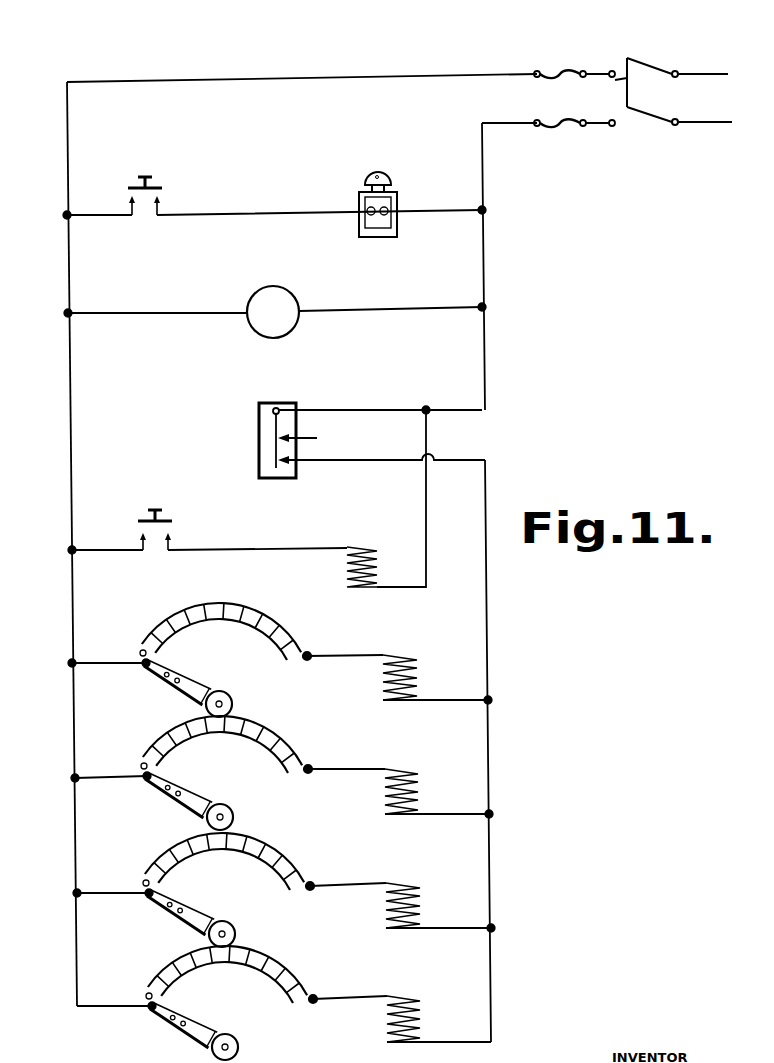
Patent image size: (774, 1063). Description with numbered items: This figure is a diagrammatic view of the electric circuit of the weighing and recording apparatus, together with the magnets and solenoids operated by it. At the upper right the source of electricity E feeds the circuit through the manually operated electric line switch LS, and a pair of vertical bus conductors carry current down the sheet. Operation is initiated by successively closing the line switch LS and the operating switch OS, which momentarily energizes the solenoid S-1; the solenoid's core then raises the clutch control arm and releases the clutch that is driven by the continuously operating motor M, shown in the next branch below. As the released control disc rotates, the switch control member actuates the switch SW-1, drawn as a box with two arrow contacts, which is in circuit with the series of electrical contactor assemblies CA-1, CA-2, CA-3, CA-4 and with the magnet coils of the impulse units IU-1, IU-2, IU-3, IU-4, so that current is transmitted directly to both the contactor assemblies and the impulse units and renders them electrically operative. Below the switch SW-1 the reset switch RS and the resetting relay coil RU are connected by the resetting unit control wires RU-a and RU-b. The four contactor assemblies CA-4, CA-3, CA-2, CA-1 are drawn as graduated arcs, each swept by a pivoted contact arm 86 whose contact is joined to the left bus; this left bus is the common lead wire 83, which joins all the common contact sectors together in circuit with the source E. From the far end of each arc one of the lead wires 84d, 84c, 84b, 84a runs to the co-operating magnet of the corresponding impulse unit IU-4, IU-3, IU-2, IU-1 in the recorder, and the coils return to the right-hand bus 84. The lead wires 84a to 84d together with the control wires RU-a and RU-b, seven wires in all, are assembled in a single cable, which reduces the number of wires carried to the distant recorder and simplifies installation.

The electric line switch LS is at (638, 58).
The source of electricity E is at (705, 78).
The operating switch OS is at (151, 186).
The solenoid S-1 is at (384, 199).
The motor M is at (292, 294).
The switch SW-1 is at (259, 433).
The reset push-button switch RS is at (160, 519).
The resetting unit control wire RU-a is at (253, 548).
The relay coil RU is at (363, 546).
The resetting unit control wire RU-b is at (428, 557).
The electrical contactor assembly CA-4 is at (225, 606).
The electrical contactor assembly CA-3 is at (245, 724).
The electrical contactor assembly CA-2 is at (266, 852).
The electrical contactor assembly CA-1 is at (266, 958).
The pivoted contact arm 86 is at (201, 686).
The common lead wire 83 is at (97, 663).
The return bus conductor 84 is at (490, 714).
The lead wire 84d is at (344, 652).
The lead wire 84c is at (337, 769).
The lead wire 84b is at (349, 886).
The lead wire 84a is at (347, 996).
The impulse unit IU-4 is at (404, 654).
The impulse unit IU-3 is at (405, 768).
The impulse unit IU-2 is at (413, 882).
The impulse unit IU-1 is at (411, 996).